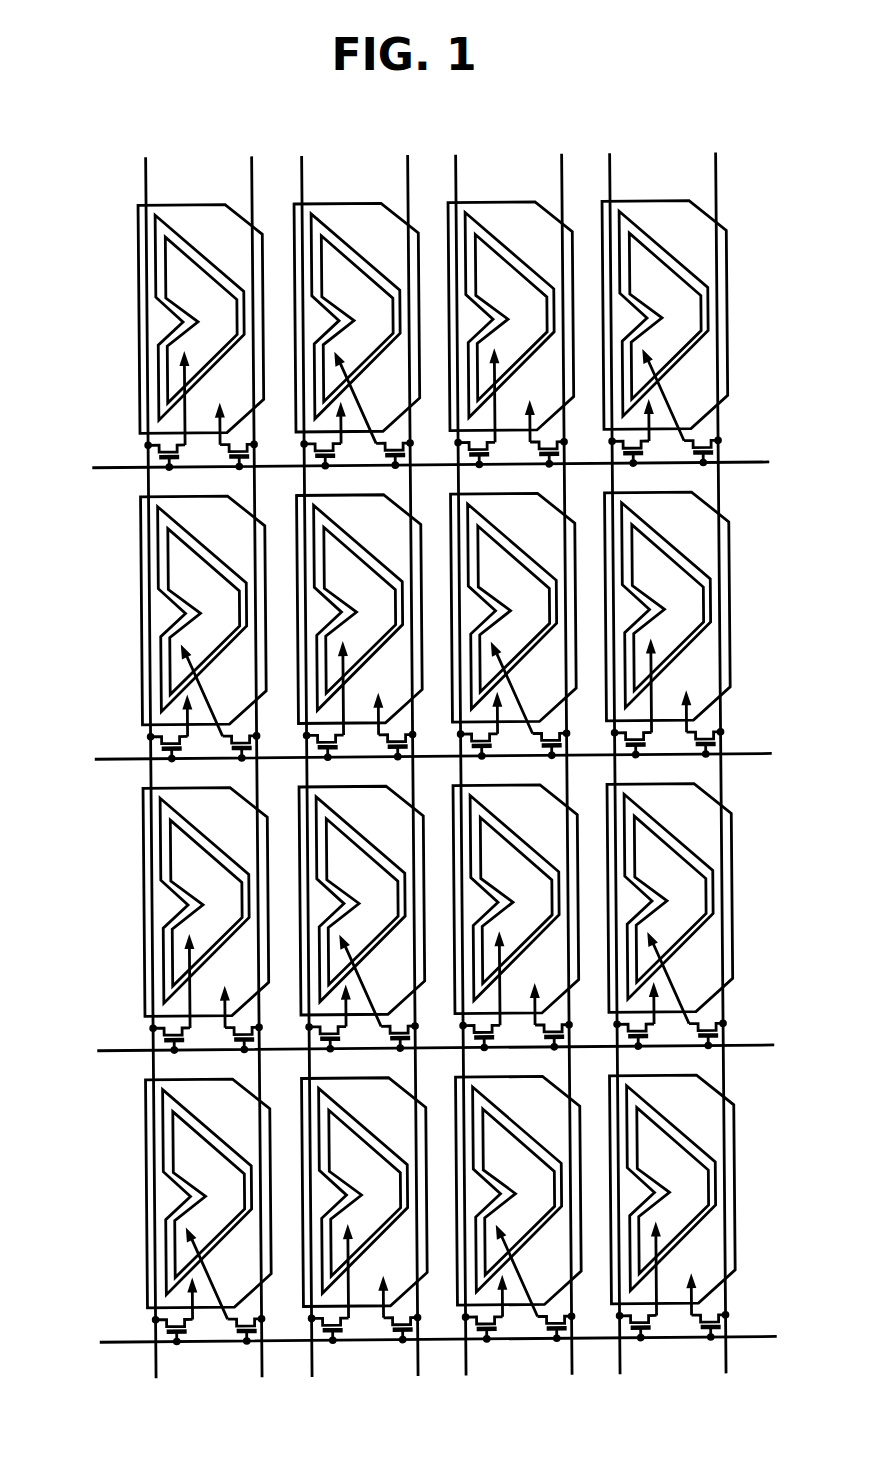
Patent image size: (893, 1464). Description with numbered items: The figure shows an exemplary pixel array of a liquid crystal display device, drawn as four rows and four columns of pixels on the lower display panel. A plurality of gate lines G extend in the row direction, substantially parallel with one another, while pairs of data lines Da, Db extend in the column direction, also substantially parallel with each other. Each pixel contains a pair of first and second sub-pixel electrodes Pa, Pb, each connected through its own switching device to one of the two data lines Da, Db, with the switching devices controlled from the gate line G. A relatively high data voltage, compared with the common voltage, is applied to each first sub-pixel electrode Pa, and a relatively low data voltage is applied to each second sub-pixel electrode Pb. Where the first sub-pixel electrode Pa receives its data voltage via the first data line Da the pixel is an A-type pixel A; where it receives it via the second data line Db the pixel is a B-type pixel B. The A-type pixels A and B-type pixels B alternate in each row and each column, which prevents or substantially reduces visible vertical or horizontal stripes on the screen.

The first data line Da is at (381, 750).
The second data line Db is at (488, 749).
The gate line G is at (423, 902).
The first sub-pixel electrode Pa is at (163, 258).
The second sub-pixel electrode Pb is at (193, 205).
The A-type pixel A is at (436, 822).
The B-type pixel B is at (436, 822).